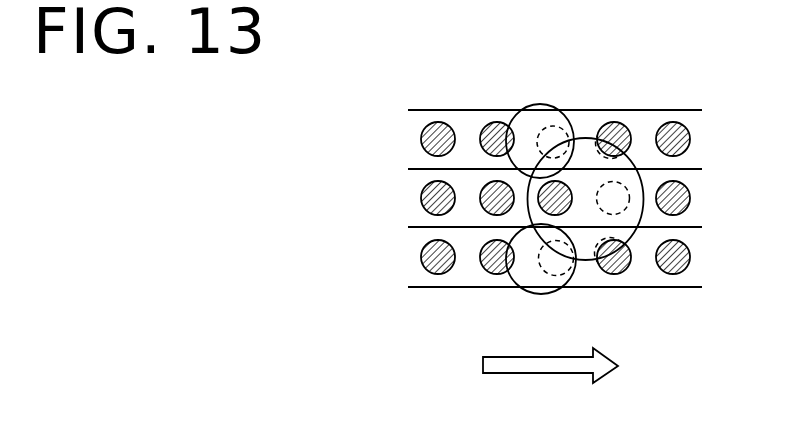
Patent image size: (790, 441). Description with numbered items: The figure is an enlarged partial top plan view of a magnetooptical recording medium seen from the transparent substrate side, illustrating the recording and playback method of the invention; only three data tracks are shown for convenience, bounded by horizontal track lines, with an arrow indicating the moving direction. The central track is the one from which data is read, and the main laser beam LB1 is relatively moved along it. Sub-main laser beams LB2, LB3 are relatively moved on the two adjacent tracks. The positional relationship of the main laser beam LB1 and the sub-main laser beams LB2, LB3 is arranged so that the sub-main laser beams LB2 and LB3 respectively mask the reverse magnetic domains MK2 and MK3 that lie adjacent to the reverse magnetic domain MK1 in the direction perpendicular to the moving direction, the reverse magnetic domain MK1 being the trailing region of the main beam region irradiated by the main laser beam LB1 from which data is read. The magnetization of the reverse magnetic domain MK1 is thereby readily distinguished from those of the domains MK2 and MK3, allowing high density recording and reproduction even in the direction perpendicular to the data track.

The reverse magnetic domain MK1 is at (572, 193).
The reverse magnetic domain MK2 is at (543, 128).
The reverse magnetic domain MK3 is at (559, 276).
The main laser beam LB1 is at (637, 170).
The sub-main laser beam LB2 is at (545, 108).
The sub-main laser beam LB3 is at (526, 289).